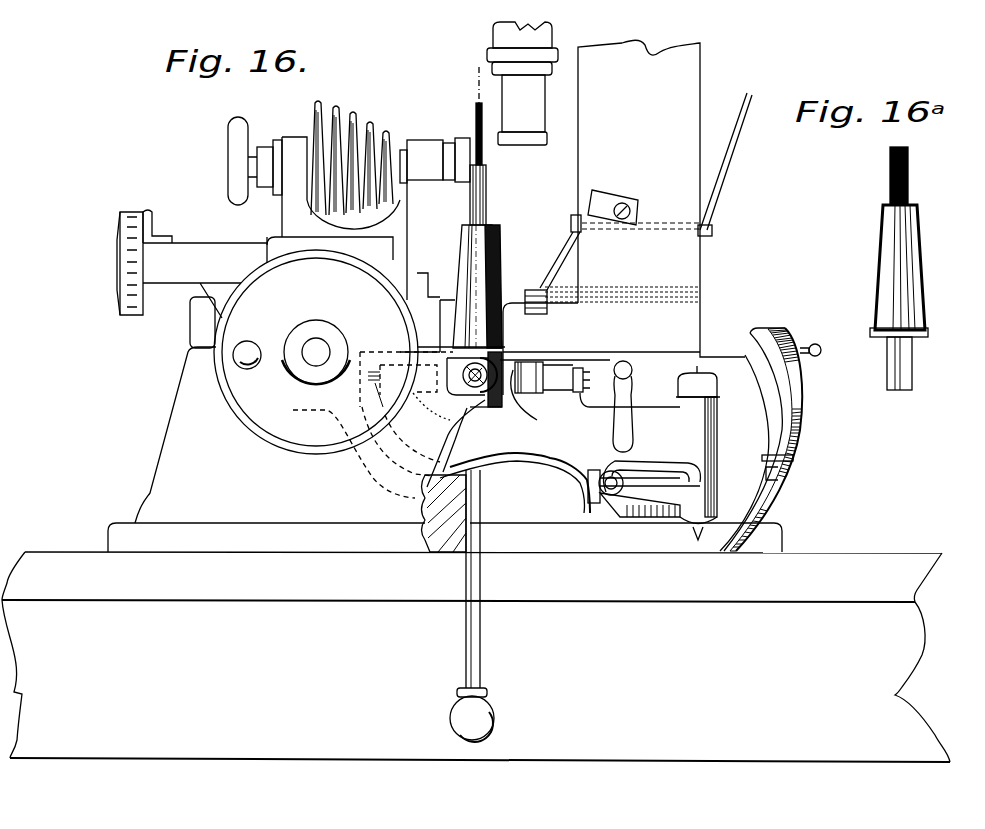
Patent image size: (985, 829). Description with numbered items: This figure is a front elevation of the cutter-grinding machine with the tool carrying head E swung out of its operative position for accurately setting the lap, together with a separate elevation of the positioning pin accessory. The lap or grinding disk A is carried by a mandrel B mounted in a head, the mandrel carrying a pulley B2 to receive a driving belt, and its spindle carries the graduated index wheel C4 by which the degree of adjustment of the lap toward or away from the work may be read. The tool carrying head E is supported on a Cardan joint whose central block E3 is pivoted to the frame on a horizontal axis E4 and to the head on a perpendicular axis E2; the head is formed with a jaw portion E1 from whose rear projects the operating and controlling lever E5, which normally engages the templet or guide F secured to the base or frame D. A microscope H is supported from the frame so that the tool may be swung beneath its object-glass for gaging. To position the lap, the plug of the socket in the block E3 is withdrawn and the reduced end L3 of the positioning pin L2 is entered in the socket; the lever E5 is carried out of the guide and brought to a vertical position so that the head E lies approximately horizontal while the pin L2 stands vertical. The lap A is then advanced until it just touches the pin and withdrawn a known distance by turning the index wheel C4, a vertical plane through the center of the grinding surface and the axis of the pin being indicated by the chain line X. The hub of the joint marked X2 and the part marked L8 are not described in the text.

In FIG. 16, the index wheel C4 is at (125, 296).
In FIG. 16, the pulley B2 is at (364, 120).
In FIG. 16, the mandrel B is at (430, 142).
In FIG. 16, the lap or grinding disk A is at (476, 112).
In FIG. 16, the chain line X is at (475, 80).
In FIG. 16, the pivot X2 is at (475, 388).
In FIG. 16, the microscope H is at (522, 83).
In FIG. 16, the positioning pin L2 is at (490, 275).
In FIG. 16A, the positioning pin L2 is at (922, 265).
In FIG. 16, the reduced end of positioning pin L3 is at (500, 348).
In FIG. 16A, the reduced end of positioning pin L3 is at (890, 370).
In FIG. 16, the tool carrying head E is at (682, 448).
In FIG. 16, the jaw portion E1 is at (513, 456).
In FIG. 16, the axis E2 is at (532, 406).
In FIG. 16, the block E3 is at (516, 364).
In FIG. 16, the horizontal axis E4 is at (465, 395).
In FIG. 16, the operating and controlling lever E5 is at (497, 640).
In FIG. 16, the templet or guide F is at (792, 434).
In FIG. 16, the base or frame D is at (420, 500).
In FIG. 16, the rod guide L8 is at (455, 562).